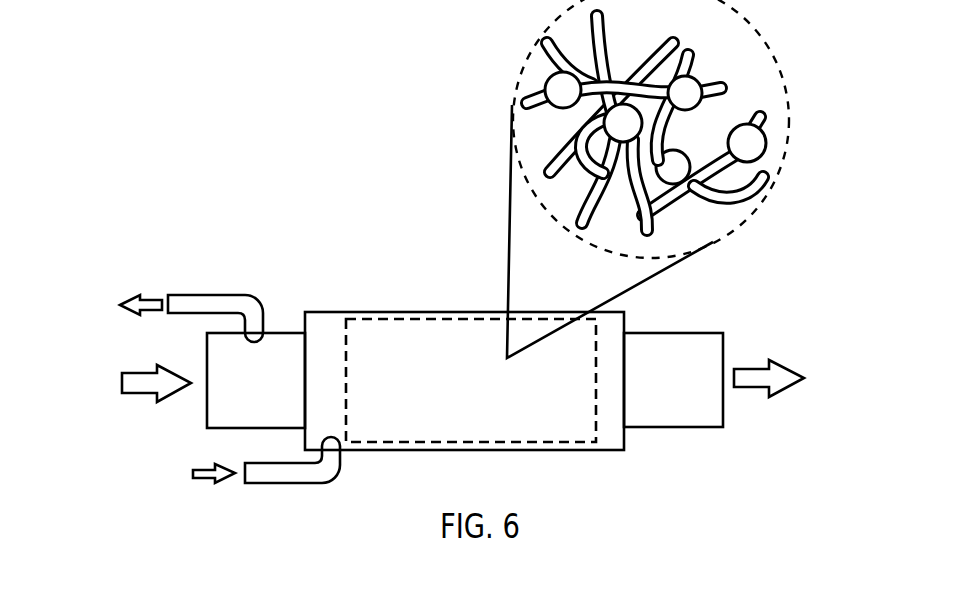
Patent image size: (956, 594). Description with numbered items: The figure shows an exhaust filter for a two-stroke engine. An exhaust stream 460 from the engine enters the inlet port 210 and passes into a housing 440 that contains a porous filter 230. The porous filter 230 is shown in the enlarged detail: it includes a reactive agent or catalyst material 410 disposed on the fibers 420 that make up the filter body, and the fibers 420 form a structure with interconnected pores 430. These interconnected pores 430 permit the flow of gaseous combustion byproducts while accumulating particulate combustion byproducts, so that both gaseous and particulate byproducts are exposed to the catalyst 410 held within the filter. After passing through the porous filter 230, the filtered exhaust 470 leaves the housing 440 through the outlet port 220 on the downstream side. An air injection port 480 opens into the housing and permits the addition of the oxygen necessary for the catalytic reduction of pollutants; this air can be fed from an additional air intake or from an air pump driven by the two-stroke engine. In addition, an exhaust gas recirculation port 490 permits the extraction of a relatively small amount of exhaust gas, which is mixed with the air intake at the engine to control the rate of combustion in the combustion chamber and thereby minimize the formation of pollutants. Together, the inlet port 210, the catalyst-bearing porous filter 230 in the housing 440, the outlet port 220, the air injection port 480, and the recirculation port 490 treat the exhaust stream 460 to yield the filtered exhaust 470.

The inlet port 210 is at (207, 428).
The outlet chamber 220 is at (702, 428).
The porous filter 230 is at (413, 317).
The catalyst material 410 is at (770, 152).
The fibers 420 is at (695, 183).
The interconnected pores 430 is at (652, 185).
The housing 440 is at (327, 308).
The exhaust stream 460 is at (133, 393).
The filtered exhaust 470 is at (760, 387).
The air injection port 480 is at (300, 483).
The exhaust gas recirculation port 490 is at (203, 295).